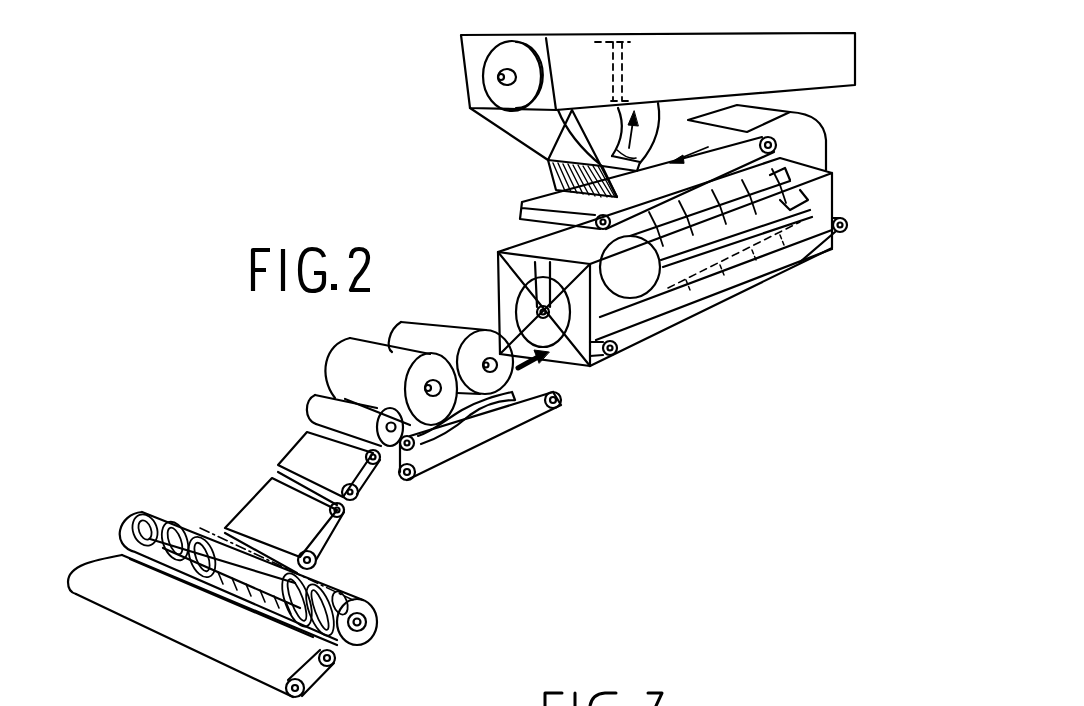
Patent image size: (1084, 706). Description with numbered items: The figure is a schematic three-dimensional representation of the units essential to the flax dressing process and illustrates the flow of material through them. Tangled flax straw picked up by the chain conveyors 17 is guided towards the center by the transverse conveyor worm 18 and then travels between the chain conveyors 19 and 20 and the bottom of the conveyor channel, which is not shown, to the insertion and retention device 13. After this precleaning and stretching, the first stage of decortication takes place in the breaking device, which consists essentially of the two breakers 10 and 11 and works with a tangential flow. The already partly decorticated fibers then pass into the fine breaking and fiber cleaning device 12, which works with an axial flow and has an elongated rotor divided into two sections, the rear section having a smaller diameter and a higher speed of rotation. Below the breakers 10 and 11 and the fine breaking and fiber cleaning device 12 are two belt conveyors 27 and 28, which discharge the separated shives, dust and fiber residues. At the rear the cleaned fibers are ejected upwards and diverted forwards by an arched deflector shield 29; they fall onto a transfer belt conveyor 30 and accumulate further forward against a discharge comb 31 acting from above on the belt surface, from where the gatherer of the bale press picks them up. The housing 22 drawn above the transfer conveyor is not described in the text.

The breaker 10 is at (331, 355).
The breaker 11 is at (428, 320).
The fine breaking and fiber cleaning device 12 is at (731, 305).
The insertion and retention device 13 is at (304, 404).
The chain conveyor 17 is at (143, 617).
The transverse conveyor worm 18 is at (140, 522).
The chain conveyor 19 is at (250, 513).
The chain conveyor 20 is at (293, 460).
The upper housing 22 is at (472, 116).
The belt conveyor 27 is at (473, 440).
The belt conveyor 28 is at (673, 313).
The arched deflector shield 29 is at (814, 129).
The transfer belt conveyor 30 is at (660, 153).
The discharge comb 31 is at (558, 184).